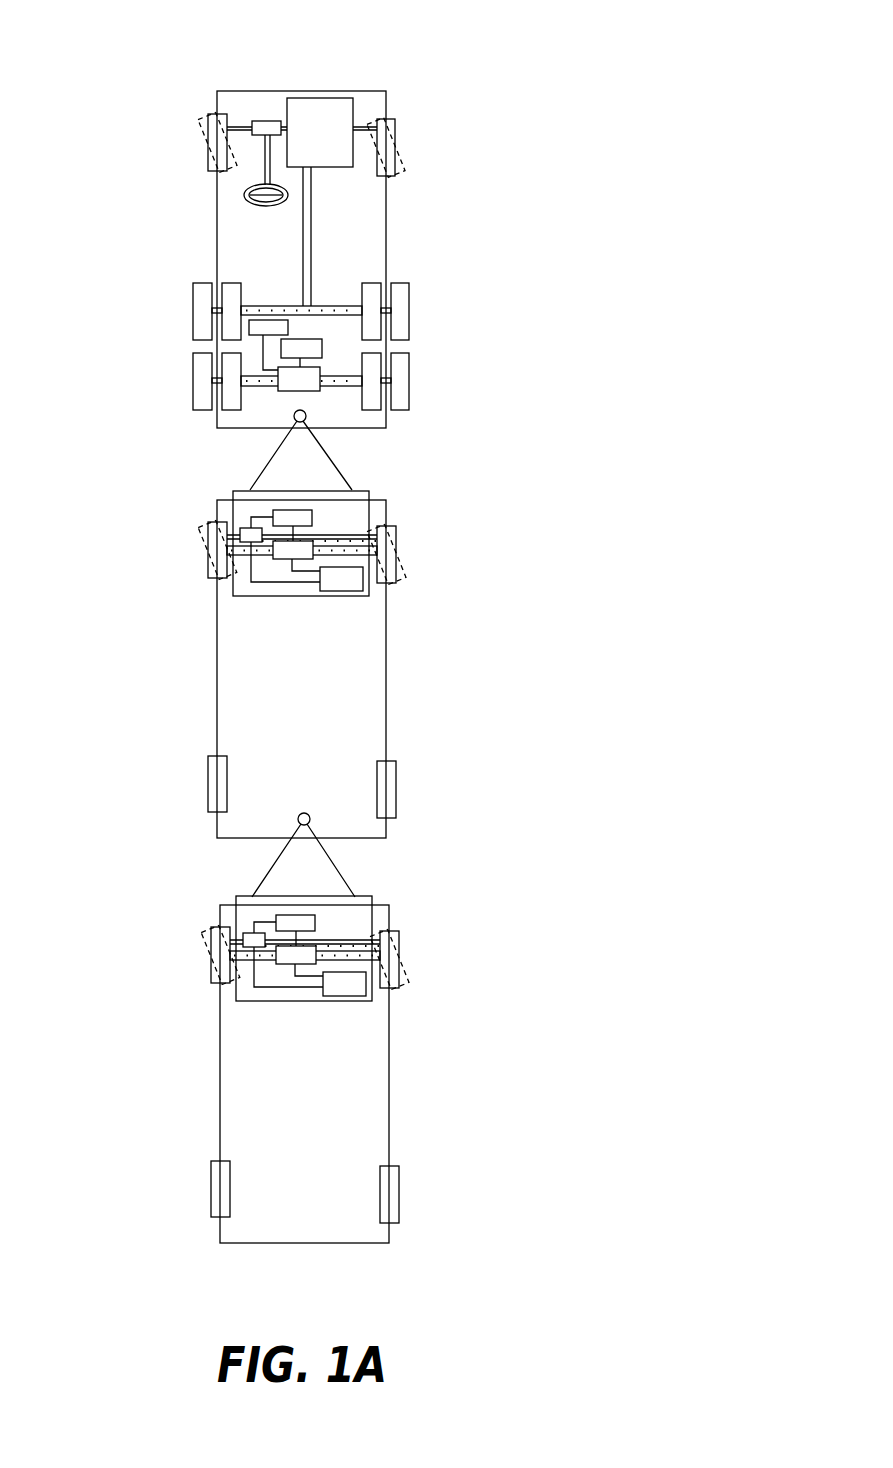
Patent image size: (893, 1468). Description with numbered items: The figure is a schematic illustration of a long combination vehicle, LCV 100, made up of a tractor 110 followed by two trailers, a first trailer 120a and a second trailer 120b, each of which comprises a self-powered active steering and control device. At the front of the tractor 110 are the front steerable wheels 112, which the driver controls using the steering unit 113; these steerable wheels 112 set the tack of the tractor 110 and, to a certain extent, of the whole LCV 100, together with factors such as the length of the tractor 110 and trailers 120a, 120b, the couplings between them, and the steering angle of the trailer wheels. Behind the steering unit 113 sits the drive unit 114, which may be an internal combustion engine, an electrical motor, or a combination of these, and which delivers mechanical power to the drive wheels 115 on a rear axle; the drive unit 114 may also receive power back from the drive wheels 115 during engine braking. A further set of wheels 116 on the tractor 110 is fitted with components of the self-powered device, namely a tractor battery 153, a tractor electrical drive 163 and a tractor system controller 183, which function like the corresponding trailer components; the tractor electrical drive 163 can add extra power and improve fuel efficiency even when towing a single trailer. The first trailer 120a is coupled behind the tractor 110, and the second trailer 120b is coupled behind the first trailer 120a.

The LCV 100 is at (423, 118).
The tractor 110 is at (208, 260).
The front steerable wheels 112 is at (198, 127).
The steering unit 113 is at (265, 121).
The drive unit 114 is at (320, 127).
The drive wheels 115 is at (203, 316).
The wheels 116 is at (203, 388).
The tractor battery 153 is at (268, 322).
The tractor system controller 183 is at (322, 344).
The tractor electrical drive 163 is at (297, 387).
The first trailer 120a is at (200, 624).
The second trailer 120b is at (203, 1028).